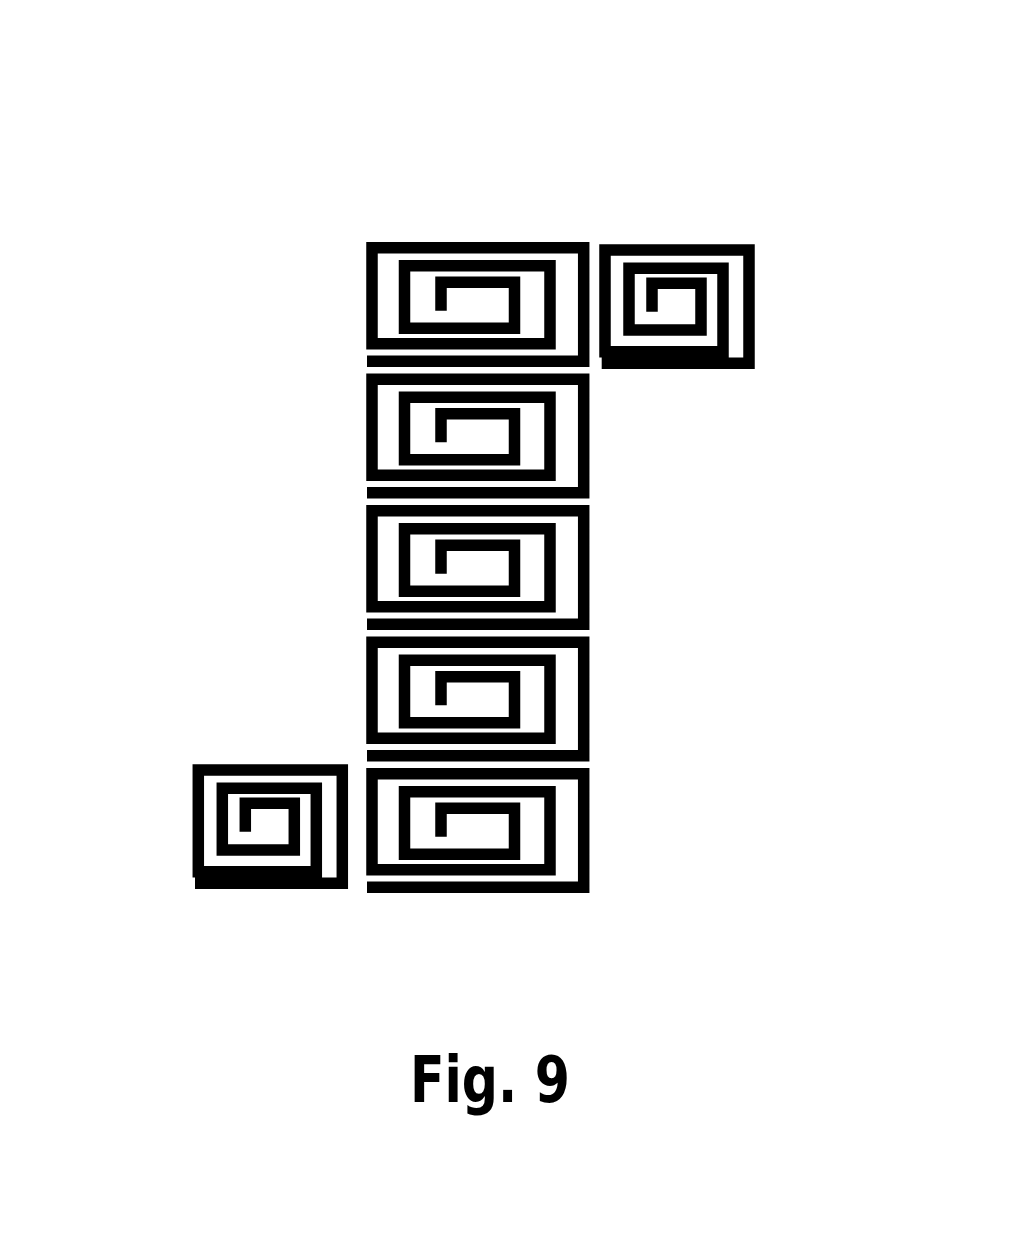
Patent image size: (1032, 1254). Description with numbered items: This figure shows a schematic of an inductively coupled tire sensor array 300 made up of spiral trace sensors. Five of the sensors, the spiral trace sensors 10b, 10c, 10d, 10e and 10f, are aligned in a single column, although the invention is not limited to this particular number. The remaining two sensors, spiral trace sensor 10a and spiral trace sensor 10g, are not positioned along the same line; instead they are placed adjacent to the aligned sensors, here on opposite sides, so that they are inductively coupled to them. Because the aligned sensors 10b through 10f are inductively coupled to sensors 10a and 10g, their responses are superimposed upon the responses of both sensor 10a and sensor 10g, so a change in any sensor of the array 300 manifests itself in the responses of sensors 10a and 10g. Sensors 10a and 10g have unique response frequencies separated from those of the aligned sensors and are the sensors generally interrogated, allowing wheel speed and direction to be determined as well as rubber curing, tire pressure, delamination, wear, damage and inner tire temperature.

The sensor array 300 is at (190, 76).
The spiral trace sensor 10a is at (755, 290).
The spiral trace sensor 10b is at (366, 310).
The spiral trace sensor 10c is at (366, 428).
The spiral trace sensor 10d is at (366, 562).
The spiral trace sensor 10e is at (366, 690).
The spiral trace sensor 10f is at (588, 830).
The spiral trace sensor 10g is at (195, 825).